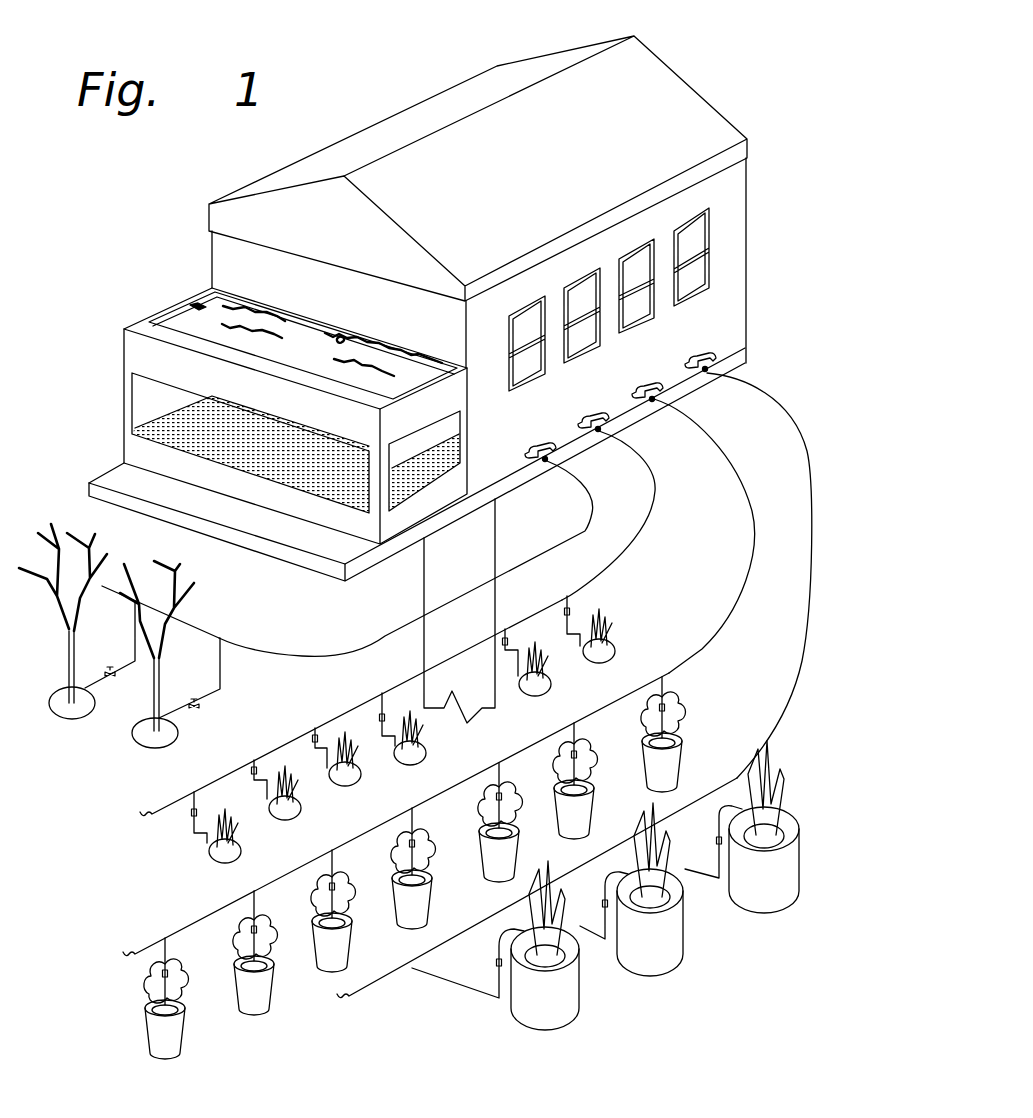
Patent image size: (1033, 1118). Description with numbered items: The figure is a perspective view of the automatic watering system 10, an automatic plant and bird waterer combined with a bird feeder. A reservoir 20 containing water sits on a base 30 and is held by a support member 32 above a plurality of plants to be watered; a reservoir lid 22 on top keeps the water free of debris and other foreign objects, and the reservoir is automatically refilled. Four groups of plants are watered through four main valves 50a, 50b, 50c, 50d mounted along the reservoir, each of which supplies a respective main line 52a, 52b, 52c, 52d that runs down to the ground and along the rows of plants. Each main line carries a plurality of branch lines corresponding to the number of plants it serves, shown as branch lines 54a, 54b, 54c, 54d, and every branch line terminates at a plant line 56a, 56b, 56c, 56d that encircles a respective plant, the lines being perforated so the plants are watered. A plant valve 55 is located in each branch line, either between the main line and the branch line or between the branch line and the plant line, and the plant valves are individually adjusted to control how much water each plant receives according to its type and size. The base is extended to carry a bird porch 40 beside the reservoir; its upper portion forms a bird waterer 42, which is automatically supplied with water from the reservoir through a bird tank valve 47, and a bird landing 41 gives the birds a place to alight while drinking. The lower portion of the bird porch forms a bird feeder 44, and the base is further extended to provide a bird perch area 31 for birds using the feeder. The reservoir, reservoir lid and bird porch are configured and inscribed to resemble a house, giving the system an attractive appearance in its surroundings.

The automatic watering system 10 is at (165, 232).
The reservoir 20 is at (507, 213).
The reservoir lid 22 is at (680, 92).
The base 30 is at (417, 467).
The bird perch area 31 is at (210, 503).
The support member 32 is at (418, 603).
The bird porch 40 is at (261, 401).
The bird landing 41 is at (299, 382).
The bird waterer 42 is at (203, 304).
The bird feeder 44 is at (152, 446).
The bird tank valve 47 is at (342, 337).
The main valve 50a is at (537, 462).
The main valve 50b is at (590, 432).
The main valve 50c is at (645, 402).
The main valve 50d is at (707, 374).
The main line 52a is at (388, 633).
The main line 52b is at (620, 548).
The main line 52c is at (730, 600).
The main line 52d is at (795, 673).
The branch line 54a is at (220, 663).
The branch line 54b is at (192, 827).
The branch line 54c is at (148, 945).
The branch line 54d is at (440, 978).
The plant valve 55 is at (578, 600).
The plant line 56a is at (138, 750).
The plant line 56b is at (212, 853).
The plant line 56c is at (140, 1005).
The plant line 56d is at (563, 945).